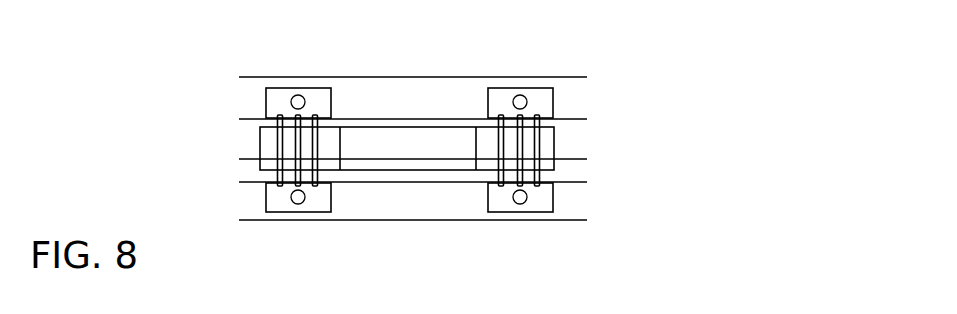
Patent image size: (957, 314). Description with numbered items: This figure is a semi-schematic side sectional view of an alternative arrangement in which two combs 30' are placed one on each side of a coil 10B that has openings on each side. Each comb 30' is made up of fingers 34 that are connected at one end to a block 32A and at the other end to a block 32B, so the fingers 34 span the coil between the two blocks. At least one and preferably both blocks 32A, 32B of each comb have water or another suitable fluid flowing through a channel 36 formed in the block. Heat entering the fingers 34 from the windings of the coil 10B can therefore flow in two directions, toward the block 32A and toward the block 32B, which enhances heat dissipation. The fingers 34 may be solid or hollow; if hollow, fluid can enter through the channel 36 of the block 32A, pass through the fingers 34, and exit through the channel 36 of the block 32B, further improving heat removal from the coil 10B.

The coil 10B is at (242, 138).
The comb 30' is at (382, 158).
The block 32A is at (325, 102).
The block 32B is at (323, 200).
The fingers 34 is at (268, 140).
The channel 36 is at (298, 95).